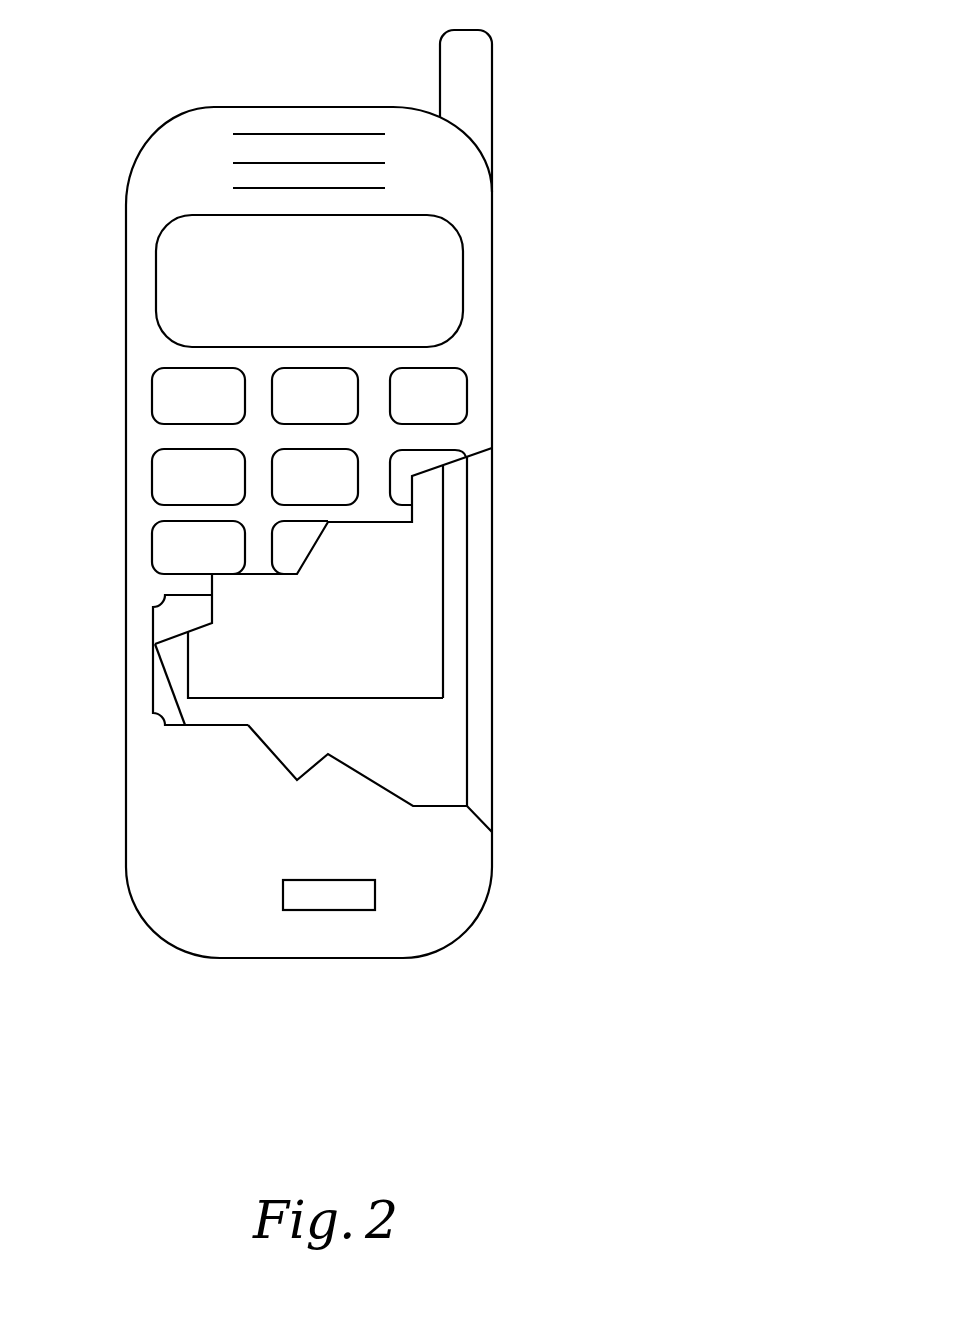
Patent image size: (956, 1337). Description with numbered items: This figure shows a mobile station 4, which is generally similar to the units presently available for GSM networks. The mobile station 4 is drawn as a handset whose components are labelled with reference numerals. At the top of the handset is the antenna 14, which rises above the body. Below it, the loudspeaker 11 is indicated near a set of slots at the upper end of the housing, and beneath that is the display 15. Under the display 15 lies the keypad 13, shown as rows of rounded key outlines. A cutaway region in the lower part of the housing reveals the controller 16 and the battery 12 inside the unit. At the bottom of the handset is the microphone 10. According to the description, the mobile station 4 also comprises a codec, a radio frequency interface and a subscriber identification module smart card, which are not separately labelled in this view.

The mobile station 4 is at (560, 475).
The microphone 10 is at (339, 897).
The loudspeaker 11 is at (355, 163).
The battery 12 is at (428, 757).
The keypad 13 is at (153, 512).
The antenna 14 is at (475, 79).
The display 15 is at (430, 288).
The controller 16 is at (372, 610).